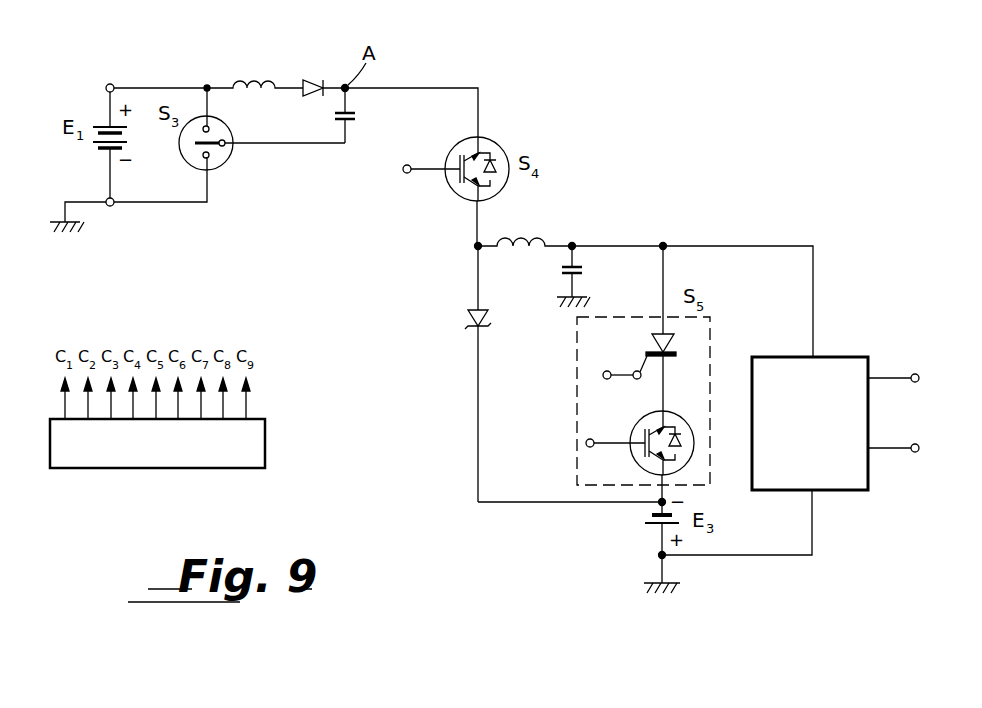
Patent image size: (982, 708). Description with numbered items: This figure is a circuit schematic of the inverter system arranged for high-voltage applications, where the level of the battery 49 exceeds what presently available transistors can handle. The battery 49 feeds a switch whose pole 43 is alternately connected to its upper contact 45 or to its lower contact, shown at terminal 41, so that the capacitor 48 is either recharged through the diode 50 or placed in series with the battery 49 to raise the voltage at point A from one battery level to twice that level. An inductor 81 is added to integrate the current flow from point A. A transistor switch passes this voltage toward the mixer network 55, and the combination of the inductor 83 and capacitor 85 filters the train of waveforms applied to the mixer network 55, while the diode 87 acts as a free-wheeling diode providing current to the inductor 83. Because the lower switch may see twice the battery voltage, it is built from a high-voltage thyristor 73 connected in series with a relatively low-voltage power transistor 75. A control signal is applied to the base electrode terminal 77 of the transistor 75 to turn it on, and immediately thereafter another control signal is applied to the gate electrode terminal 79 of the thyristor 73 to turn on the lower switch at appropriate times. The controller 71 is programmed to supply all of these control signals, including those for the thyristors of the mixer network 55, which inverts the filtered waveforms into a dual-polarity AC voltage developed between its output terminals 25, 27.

The inductor 81 is at (243, 74).
The diode 50 is at (306, 74).
The capacitor 48 is at (357, 114).
The upper contact 45 is at (210, 128).
The pole 43 is at (226, 148).
The switch terminal 41 is at (209, 158).
The battery 49 is at (128, 140).
The inductor 83 is at (519, 240).
The capacitor 85 is at (584, 270).
The diode 87 is at (492, 325).
The thyristor 73 is at (677, 352).
The transistor 75 is at (666, 416).
The base electrode terminal 77 is at (591, 439).
The gate electrode terminal 79 is at (605, 371).
The controller 71 is at (266, 438).
The mixer network 55 is at (816, 441).
The output terminal 25 is at (915, 374).
The output terminal 27 is at (919, 446).